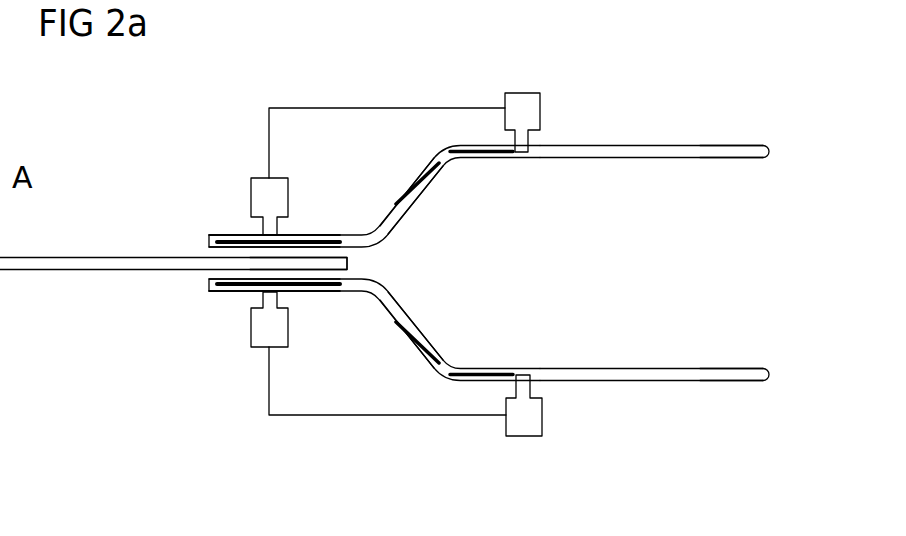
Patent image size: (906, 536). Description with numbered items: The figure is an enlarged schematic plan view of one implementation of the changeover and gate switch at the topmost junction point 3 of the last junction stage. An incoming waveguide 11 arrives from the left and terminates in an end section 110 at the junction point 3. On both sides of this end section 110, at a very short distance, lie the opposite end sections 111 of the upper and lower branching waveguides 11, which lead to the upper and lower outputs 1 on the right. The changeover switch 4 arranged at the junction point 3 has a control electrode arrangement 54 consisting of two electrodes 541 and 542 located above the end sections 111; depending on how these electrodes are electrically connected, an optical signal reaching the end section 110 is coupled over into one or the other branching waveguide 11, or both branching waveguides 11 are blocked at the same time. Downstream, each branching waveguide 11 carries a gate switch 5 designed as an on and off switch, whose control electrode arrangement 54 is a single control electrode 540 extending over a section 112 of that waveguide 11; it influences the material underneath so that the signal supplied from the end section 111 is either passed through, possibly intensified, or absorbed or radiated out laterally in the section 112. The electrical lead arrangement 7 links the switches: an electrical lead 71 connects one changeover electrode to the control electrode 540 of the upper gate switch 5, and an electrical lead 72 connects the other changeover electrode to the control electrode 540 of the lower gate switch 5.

The output 1 is at (764, 150).
The junction point 3 is at (190, 215).
The changeover switch 4 is at (305, 228).
The gate switch 5 is at (475, 138).
The electrical lead arrangement 7 is at (387, 274).
The waveguide 11 is at (54, 268).
The control electrode arrangement 54 is at (236, 300).
The electrical lead 71 is at (336, 108).
The electrical lead 72 is at (325, 415).
The end section 110 is at (248, 265).
The end section 111 is at (333, 237).
The section 112 is at (420, 160).
The control electrode 540 is at (455, 163).
The electrode 541 is at (236, 240).
The electrode 542 is at (225, 293).